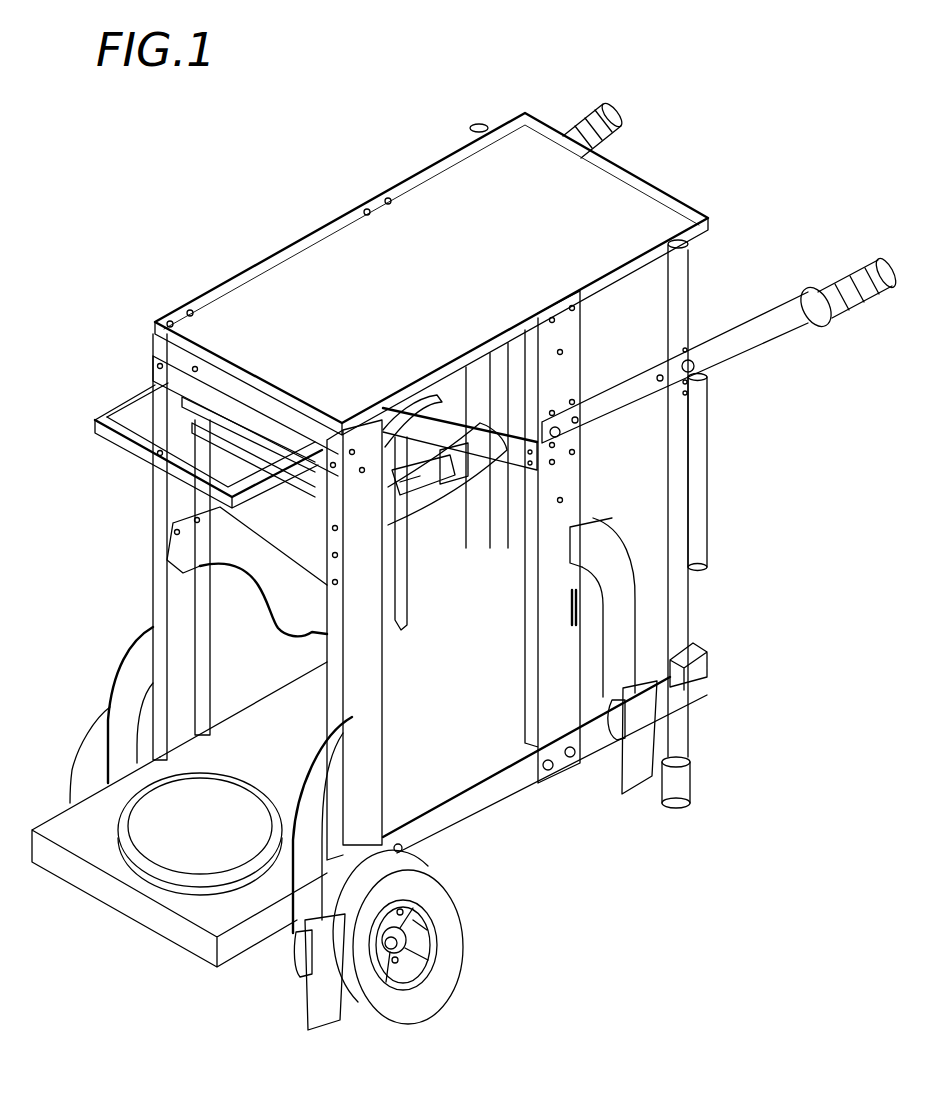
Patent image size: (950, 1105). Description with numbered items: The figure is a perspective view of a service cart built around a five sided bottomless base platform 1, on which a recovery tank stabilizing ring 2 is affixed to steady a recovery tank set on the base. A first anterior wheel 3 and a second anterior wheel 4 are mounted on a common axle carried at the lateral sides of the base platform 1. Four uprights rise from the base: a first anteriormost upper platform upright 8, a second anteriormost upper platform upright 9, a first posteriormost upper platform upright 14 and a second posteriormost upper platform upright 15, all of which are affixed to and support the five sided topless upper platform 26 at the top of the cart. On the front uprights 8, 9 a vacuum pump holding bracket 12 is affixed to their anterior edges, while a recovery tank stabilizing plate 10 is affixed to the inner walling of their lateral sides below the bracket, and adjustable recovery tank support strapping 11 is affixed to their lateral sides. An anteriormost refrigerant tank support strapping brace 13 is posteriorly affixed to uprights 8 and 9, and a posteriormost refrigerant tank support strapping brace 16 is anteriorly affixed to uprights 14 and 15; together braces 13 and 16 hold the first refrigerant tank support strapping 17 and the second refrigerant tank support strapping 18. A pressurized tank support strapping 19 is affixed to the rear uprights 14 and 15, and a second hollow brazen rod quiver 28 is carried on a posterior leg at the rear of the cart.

The five sided bottomless base platform 1 is at (167, 927).
The recovery tank stabilizing ring 2 is at (143, 867).
The first anterior wheel 3 is at (92, 750).
The second anterior wheel 4 is at (430, 987).
The first anteriormost upper platform upright 8 is at (160, 502).
The second anteriormost upper platform upright 9 is at (370, 780).
The recovery tank stabilizing plate 10 is at (193, 553).
The adjustable recovery tank support strapping 11 is at (130, 687).
The vacuum pump holding bracket 12 is at (128, 397).
The anteriormost refrigerant tank support strapping brace 13 is at (277, 625).
The first posteriormost upper platform upright 14 is at (400, 590).
The second posteriormost upper platform upright 15 is at (557, 680).
The posteriormost refrigerant tank support strapping brace 16 is at (523, 448).
The first refrigerant tank support strapping 17 is at (413, 400).
The second refrigerant tank support strapping 18 is at (450, 465).
The pressurized tank support strapping 19 is at (620, 580).
The five sided topless upper platform 26 is at (348, 268).
The second hollow brazen rod quiver 28 is at (700, 490).